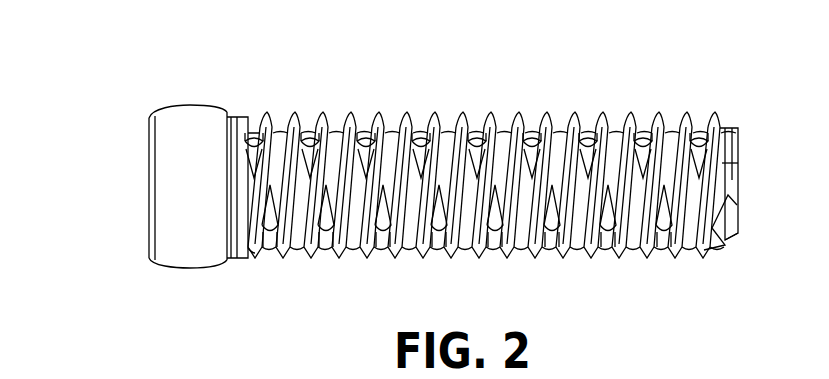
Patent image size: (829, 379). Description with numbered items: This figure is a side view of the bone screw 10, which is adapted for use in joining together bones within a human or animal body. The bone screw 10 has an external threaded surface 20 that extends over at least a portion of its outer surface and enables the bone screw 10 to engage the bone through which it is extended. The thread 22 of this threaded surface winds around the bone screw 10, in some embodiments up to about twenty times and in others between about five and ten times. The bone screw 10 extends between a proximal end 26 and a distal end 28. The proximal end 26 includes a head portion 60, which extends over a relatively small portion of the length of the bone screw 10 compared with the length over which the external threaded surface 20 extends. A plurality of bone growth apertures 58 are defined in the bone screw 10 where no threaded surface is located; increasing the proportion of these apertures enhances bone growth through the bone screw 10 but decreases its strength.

The bone screw 10 is at (591, 88).
The external threaded surface 20 is at (687, 114).
The thread 22 is at (542, 128).
The proximal end 26 is at (150, 121).
The distal end 28 is at (738, 128).
The bone growth apertures 58 is at (426, 128).
The head portion 60 is at (186, 256).